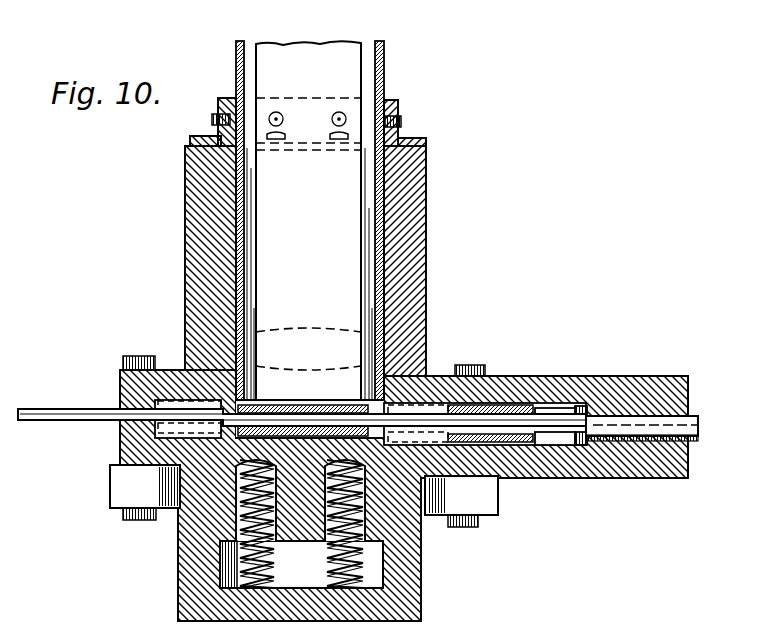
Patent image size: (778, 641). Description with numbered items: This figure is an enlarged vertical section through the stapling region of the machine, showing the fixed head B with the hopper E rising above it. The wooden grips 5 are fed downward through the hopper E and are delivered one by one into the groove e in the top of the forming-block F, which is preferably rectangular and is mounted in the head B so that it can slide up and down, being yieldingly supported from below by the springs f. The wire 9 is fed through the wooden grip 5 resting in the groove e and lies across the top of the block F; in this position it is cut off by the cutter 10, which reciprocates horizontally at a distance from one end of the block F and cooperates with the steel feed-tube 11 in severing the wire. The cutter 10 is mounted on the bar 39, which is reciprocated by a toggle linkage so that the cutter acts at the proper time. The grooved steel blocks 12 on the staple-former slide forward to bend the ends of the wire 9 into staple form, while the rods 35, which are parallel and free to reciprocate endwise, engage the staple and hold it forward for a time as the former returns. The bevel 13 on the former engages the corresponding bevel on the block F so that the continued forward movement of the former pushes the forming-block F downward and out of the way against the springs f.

The fixed head B is at (420, 253).
The hopper E is at (377, 62).
The groove e is at (112, 440).
The forming-block F is at (301, 524).
The springs f is at (215, 549).
The rods 35 is at (178, 326).
The bevel 13 is at (392, 370).
The wooden grip 5 is at (291, 398).
The grooved steel blocks 12 is at (170, 388).
The bar 39 is at (540, 400).
The cutter 10 is at (577, 398).
The steel feed-tube 11 is at (632, 413).
The wire 9 is at (62, 400).